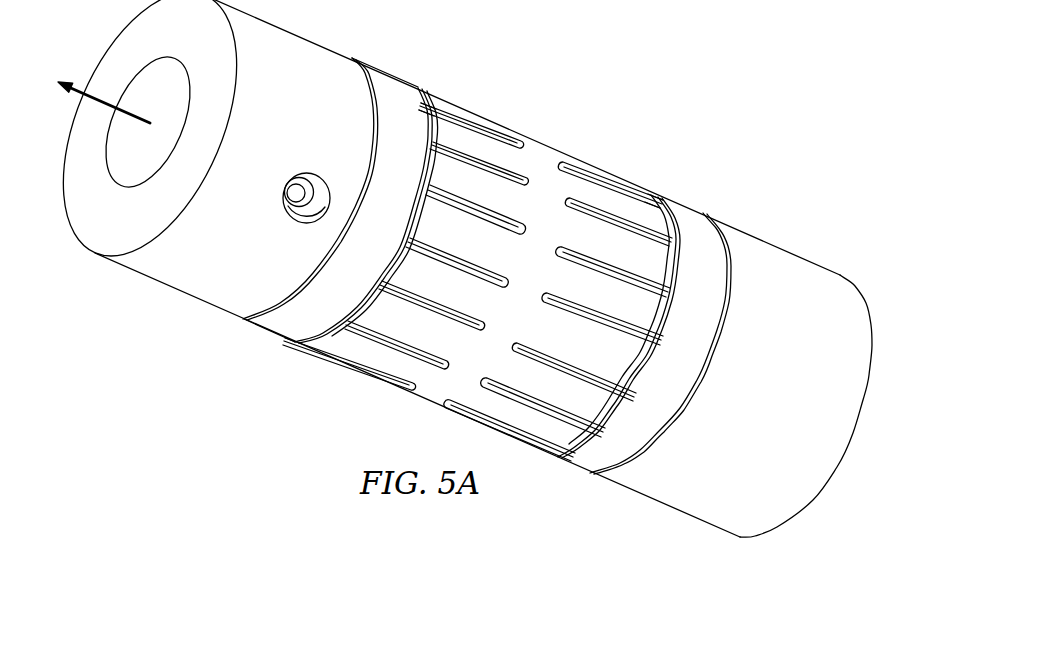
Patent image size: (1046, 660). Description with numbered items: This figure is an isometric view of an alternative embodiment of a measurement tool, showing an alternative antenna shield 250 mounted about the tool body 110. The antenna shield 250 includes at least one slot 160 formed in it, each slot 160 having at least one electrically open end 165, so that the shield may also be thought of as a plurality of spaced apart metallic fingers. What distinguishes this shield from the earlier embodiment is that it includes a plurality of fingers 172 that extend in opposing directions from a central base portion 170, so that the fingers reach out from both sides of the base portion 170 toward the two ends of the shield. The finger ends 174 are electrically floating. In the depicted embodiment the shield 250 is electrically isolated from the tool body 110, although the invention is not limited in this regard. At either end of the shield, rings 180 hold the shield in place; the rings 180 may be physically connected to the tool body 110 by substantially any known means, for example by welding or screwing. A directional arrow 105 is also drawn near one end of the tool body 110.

The flow direction arrow 105 is at (102, 97).
The tool body 110 is at (173, 280).
The slot 160 is at (447, 312).
The electrically open end 165 is at (405, 237).
The base portion 170 is at (509, 253).
The fingers 172 is at (477, 137).
The finger ends 174 is at (437, 120).
The rings 180 is at (387, 84).
The antenna shield 250 is at (450, 268).